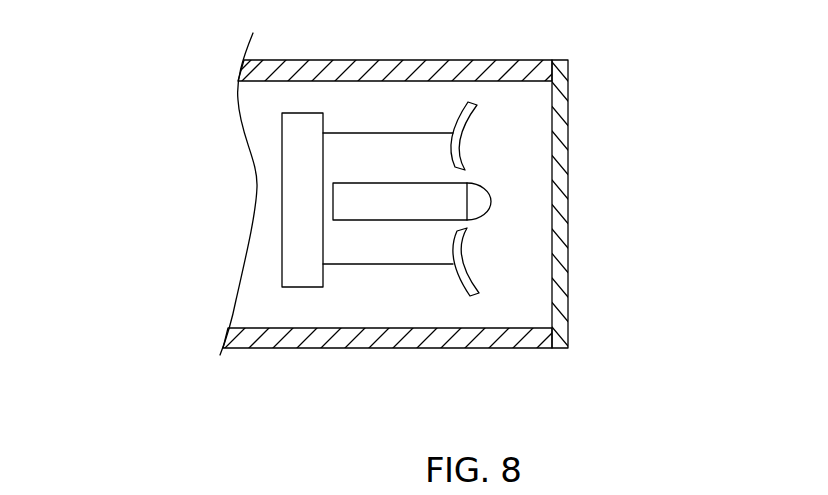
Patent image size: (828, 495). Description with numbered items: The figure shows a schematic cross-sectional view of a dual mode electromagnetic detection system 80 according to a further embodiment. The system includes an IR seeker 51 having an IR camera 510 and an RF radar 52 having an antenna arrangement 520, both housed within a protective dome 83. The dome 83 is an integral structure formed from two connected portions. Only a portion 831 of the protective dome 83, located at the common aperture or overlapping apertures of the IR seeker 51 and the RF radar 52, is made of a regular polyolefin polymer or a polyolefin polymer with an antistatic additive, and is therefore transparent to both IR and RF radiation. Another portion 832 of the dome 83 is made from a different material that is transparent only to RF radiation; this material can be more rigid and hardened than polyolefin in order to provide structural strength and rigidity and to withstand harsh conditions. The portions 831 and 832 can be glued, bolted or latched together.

The dual mode electromagnetic detection system 80 is at (173, 320).
The protective dome 83 is at (462, 238).
The portion of the protective dome 831 is at (568, 268).
The another portion of the dome 832 is at (390, 365).
The RF radar 52 is at (303, 287).
The antenna arrangement 520 is at (456, 118).
The IR seeker 51 is at (385, 220).
The IR camera 510 is at (480, 203).